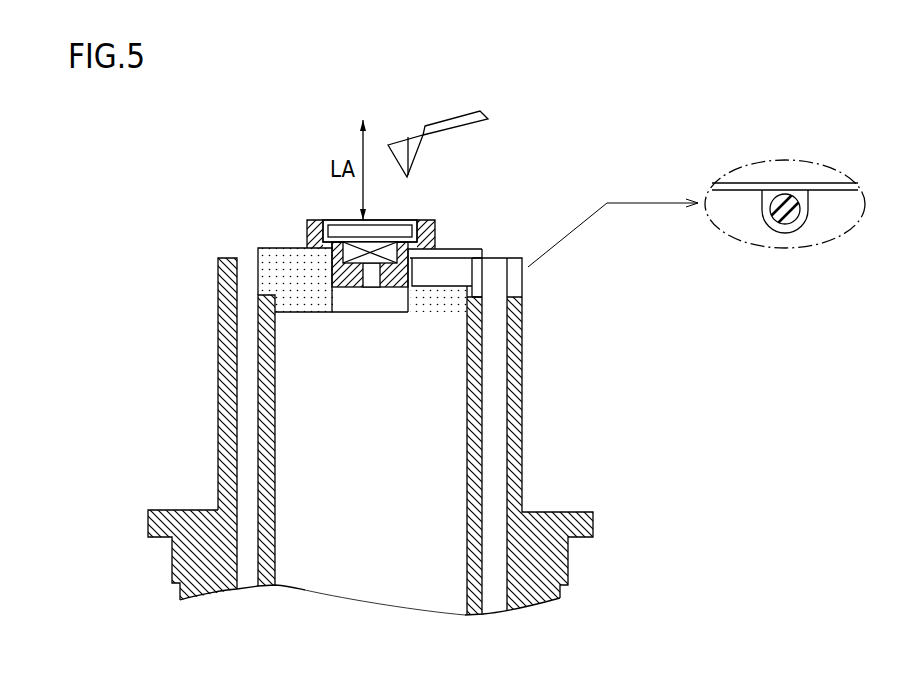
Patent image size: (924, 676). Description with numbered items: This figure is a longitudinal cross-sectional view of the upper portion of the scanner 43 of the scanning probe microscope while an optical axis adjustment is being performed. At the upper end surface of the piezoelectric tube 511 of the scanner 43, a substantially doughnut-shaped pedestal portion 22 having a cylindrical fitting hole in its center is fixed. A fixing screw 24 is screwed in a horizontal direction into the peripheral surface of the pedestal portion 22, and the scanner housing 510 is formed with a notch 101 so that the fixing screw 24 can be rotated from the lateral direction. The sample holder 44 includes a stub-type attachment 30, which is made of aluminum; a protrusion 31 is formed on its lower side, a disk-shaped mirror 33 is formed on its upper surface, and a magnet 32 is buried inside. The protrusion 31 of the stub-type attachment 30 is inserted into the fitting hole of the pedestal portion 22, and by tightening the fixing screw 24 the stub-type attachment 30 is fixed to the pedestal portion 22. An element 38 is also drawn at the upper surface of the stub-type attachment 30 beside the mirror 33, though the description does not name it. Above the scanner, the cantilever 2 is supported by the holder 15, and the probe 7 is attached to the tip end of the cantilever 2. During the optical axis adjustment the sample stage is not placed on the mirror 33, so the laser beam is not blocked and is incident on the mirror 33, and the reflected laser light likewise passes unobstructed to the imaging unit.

The cantilever 2 is at (438, 119).
The probe 7 is at (410, 157).
The holder 15 is at (460, 118).
The pedestal portion 22 is at (277, 253).
The fixing screw 24 is at (477, 273).
The stub-type attachment 30 is at (453, 236).
The protrusion 31 is at (350, 280).
The magnet 32 is at (347, 258).
The mirror 33 is at (376, 235).
The lens frame 38 is at (403, 223).
The scanner 43 is at (523, 398).
The sample holder 44 is at (252, 213).
The notch 101 is at (513, 278).
The scanner housing 510 is at (226, 427).
The piezoelectric tube 511 is at (260, 388).